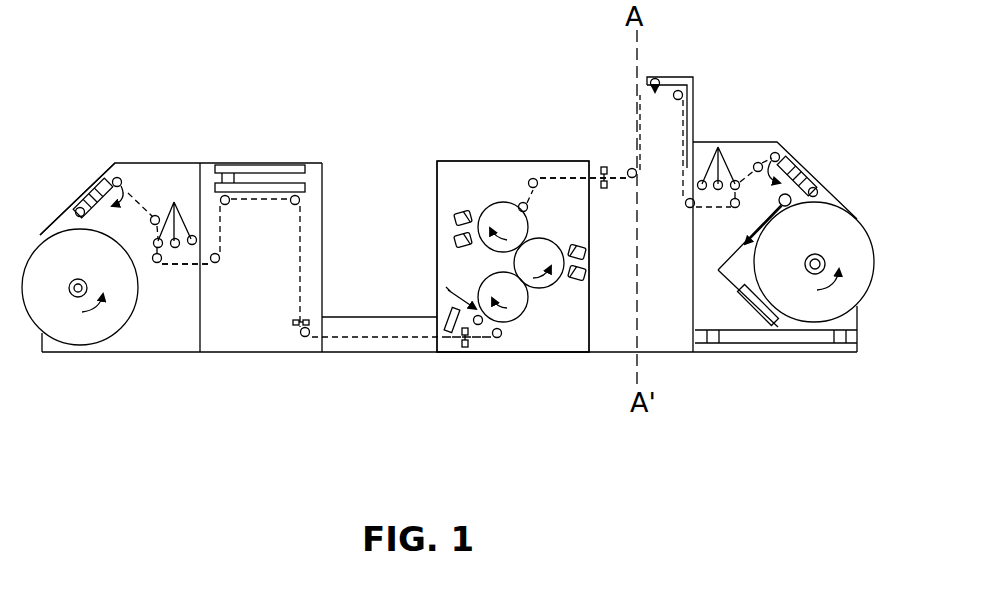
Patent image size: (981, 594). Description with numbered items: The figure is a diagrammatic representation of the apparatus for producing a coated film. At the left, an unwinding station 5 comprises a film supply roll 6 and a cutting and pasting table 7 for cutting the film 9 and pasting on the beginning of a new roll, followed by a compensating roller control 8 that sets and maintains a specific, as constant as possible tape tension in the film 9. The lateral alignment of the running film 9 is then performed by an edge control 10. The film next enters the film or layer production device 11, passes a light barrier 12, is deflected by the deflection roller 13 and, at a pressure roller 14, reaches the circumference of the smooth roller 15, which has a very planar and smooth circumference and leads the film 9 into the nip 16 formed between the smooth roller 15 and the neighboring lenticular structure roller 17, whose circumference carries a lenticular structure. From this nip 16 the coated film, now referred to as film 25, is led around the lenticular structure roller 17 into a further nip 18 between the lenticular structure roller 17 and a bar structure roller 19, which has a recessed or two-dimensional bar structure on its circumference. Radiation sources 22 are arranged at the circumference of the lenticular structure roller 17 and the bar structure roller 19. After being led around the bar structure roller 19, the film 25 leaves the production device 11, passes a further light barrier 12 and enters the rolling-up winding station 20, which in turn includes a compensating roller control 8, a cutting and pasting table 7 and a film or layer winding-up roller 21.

The unwinding station 5 is at (48, 203).
The film supply roll 6 is at (88, 336).
The cutting and pasting table 7 is at (130, 196).
The compensating roller control 8 is at (168, 194).
The film 9 is at (172, 272).
The edge control 10 is at (252, 164).
The film or layer production device 11 is at (484, 157).
The light barrier 12 is at (603, 164).
The deflection roller 13 is at (504, 334).
The pressure roller 14 is at (447, 290).
The smooth roller 15 is at (541, 323).
The nip 16 is at (504, 268).
The lenticular structure roller 17 is at (548, 283).
The further nip 18 is at (537, 231).
The bar structure roller 19 is at (490, 212).
The rolling-up winding station 20 is at (704, 99).
The film or layer winding-up roller 21 is at (796, 306).
The radiation sources 22 is at (456, 221).
The film 25 is at (553, 174).